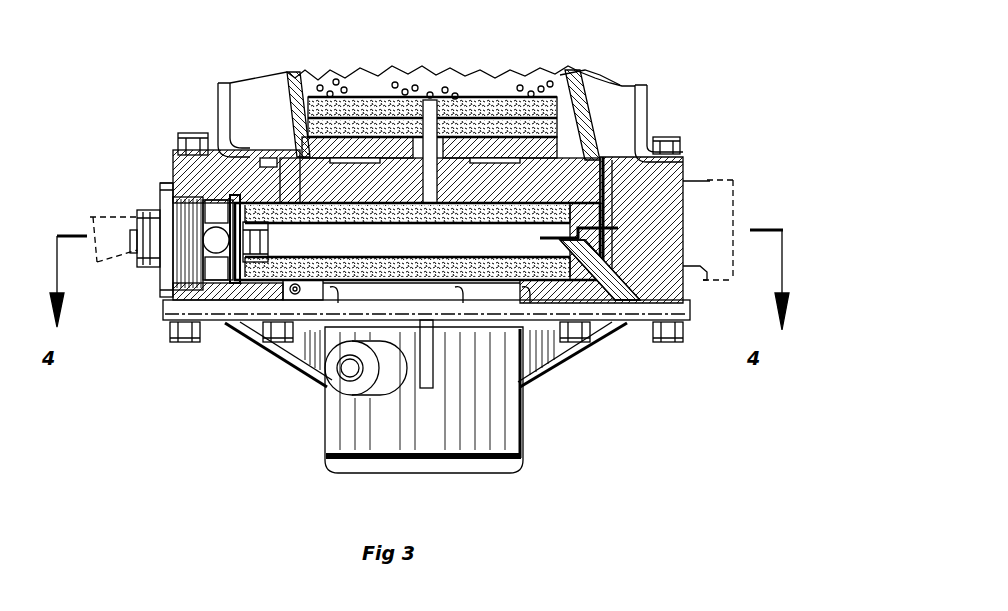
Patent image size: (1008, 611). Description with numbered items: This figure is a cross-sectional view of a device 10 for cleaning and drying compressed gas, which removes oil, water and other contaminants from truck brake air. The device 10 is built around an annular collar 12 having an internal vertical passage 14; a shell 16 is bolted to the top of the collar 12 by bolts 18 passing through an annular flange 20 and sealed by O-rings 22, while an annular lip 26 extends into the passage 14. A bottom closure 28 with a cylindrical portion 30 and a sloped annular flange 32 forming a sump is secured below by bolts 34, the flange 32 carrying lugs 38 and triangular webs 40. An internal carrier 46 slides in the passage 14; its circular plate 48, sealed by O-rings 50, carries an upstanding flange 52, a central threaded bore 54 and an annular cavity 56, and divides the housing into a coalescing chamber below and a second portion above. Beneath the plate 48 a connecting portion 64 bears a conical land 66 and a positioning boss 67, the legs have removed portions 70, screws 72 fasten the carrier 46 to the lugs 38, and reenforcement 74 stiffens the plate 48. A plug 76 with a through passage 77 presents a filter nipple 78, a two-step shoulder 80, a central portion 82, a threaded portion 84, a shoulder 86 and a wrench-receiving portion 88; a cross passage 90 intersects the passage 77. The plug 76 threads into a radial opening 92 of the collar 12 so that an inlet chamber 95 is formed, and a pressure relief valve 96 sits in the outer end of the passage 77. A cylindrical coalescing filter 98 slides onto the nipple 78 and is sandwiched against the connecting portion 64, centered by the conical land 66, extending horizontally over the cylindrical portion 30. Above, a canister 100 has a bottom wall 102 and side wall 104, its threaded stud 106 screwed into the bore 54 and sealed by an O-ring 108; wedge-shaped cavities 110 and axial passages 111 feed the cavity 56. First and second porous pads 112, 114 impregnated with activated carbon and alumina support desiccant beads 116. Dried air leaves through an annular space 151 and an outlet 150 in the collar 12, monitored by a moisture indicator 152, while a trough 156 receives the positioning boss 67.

The device for cleaning and drying compressed gas 10 is at (196, 79).
The annular collar 12 is at (728, 161).
The vertical passage 14 is at (264, 192).
The shell 16 is at (648, 92).
The bolts 18 is at (180, 134).
The annular flange 20 is at (175, 150).
The O-rings 22 is at (174, 160).
The annular lip 26 is at (590, 160).
The bottom closure 28 is at (429, 378).
The cylindrical portion 30 is at (325, 432).
The annular flange 32 is at (692, 313).
The bolts 34 is at (172, 342).
The lugs 38 is at (322, 362).
The webs 40 is at (290, 345).
The internal carrier 46 is at (258, 138).
The circular plate 48 is at (358, 190).
The O-rings 50 is at (598, 165).
The axially extending flange 52 is at (295, 110).
The threaded bore 54 is at (428, 205).
The annular cavity 56 is at (372, 150).
The connecting portion 64 is at (611, 224).
The conical land 66 is at (552, 240).
The positioning boss 67 is at (610, 340).
The removed portions 70 is at (452, 322).
The screws 72 is at (310, 277).
The reenforcement 74 is at (393, 193).
The plug 76 is at (148, 191).
The through passage 77 is at (133, 224).
The filter nipple 78 is at (270, 240).
The two-step shoulder 80 is at (250, 282).
The central portion 82 is at (200, 303).
The threaded portion 84 is at (185, 296).
The shoulder 86 is at (160, 280).
The outer end portion 88 is at (140, 248).
The cross passage 90 is at (173, 173).
The radially extending opening 92 is at (214, 298).
The inlet chamber 95 is at (215, 228).
The pressure relief valve 96 is at (90, 217).
The coalescing filter 98 is at (402, 283).
The canister 100 is at (268, 86).
The bottom wall 102 is at (437, 115).
The side wall 104 is at (598, 86).
The threaded stud 106 is at (462, 205).
The O-ring 108 is at (292, 140).
The cavities 110 is at (560, 137).
The axial passages 111 is at (510, 143).
The first porous pad 112 is at (483, 143).
The second porous pad 114 is at (366, 118).
The desiccant beads 116 is at (441, 85).
The outlet 150 is at (660, 240).
The annular space 151 is at (622, 90).
The moisture indicator 152 is at (736, 215).
The trough 156 is at (645, 282).